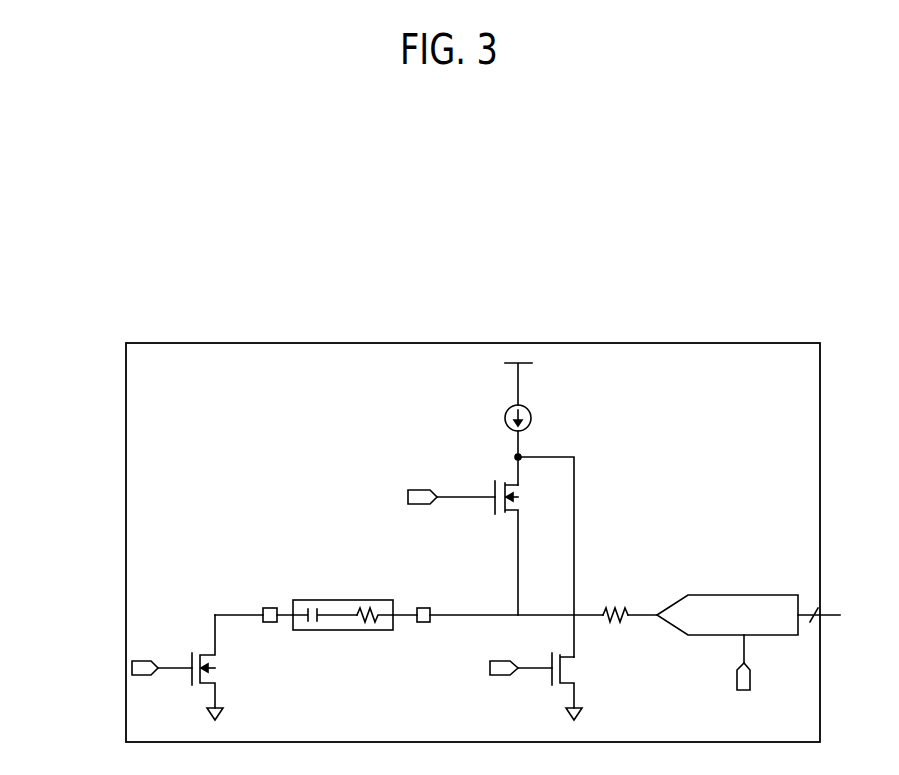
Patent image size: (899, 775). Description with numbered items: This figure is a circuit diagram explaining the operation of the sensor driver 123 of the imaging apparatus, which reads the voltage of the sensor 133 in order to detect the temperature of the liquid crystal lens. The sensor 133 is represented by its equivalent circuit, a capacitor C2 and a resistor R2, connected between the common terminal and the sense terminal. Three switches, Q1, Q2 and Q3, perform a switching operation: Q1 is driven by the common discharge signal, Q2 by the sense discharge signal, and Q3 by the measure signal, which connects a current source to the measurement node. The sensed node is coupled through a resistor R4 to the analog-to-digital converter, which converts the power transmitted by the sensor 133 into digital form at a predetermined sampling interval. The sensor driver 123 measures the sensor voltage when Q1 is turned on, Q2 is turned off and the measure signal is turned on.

The sensor driver 123 is at (414, 343).
The sensor 133 is at (343, 600).
The capacitor C2 is at (325, 632).
The resistor R2 is at (375, 631).
The resistor R4 is at (615, 603).
The switching transistor Q1 is at (219, 661).
The switching transistor Q2 is at (579, 680).
The switching transistor Q3 is at (522, 548).